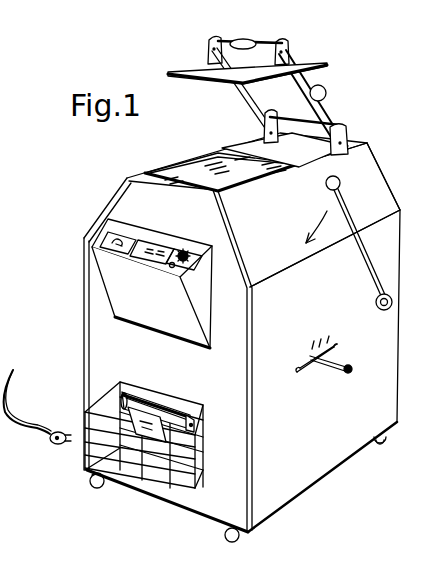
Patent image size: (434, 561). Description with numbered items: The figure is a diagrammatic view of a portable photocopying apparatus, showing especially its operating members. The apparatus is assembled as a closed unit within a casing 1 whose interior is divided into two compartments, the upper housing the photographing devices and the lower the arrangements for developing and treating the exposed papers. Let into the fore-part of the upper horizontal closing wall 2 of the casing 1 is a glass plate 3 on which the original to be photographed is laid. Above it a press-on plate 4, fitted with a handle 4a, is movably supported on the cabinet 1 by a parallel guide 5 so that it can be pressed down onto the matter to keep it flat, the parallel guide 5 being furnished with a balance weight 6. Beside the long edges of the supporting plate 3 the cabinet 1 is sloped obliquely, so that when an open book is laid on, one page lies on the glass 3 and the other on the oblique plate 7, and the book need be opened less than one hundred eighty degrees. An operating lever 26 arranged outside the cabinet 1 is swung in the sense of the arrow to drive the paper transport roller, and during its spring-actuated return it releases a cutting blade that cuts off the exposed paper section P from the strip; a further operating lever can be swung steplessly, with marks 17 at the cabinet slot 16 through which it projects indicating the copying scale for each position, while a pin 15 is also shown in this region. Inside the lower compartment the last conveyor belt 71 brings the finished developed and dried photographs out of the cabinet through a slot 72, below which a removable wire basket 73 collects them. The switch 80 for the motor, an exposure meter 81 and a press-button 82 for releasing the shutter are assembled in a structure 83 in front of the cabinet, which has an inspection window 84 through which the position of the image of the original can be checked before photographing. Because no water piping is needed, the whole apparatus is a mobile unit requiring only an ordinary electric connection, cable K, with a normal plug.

The casing 1 is at (112, 197).
The upper horizontal closing wall 2 is at (253, 148).
The glass plate 3 is at (204, 161).
The press-on plate 4 is at (190, 70).
The handle 4a is at (245, 39).
The parallel guide 5 is at (238, 98).
The balance weight 6 is at (325, 93).
The oblique plate 7 is at (378, 176).
The knob / handle rod 15 is at (348, 374).
The cabinet slot 16 is at (315, 366).
The marks 17 is at (312, 351).
The operating lever 26 is at (370, 262).
The conveyor belt 71 is at (148, 400).
The slot 72 is at (195, 437).
The wire basket 73 is at (153, 486).
The switch 80 is at (106, 240).
The exposure meter 81 is at (186, 249).
The press-button 82 is at (171, 268).
The structure 83 is at (102, 283).
The inspection window 84 is at (153, 242).
The cable K is at (38, 430).
The exposed paper section P is at (164, 413).